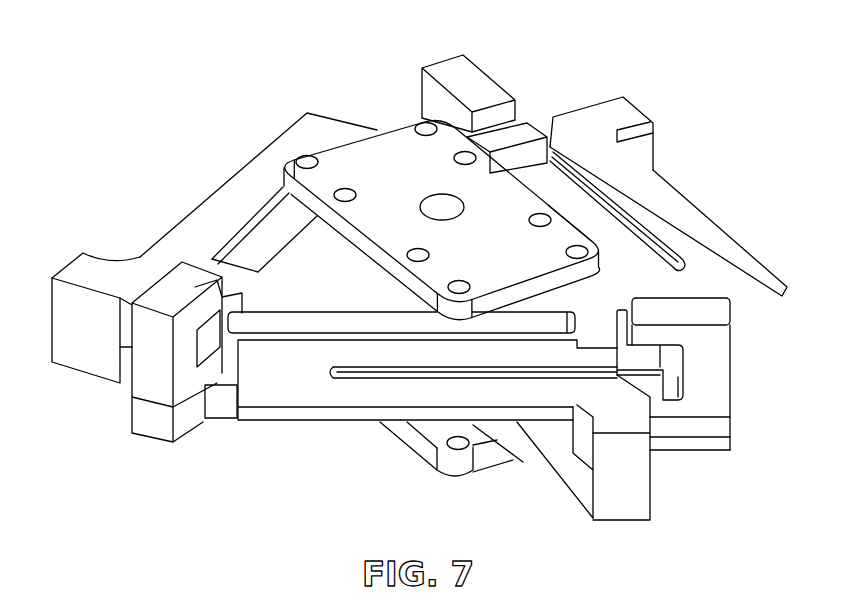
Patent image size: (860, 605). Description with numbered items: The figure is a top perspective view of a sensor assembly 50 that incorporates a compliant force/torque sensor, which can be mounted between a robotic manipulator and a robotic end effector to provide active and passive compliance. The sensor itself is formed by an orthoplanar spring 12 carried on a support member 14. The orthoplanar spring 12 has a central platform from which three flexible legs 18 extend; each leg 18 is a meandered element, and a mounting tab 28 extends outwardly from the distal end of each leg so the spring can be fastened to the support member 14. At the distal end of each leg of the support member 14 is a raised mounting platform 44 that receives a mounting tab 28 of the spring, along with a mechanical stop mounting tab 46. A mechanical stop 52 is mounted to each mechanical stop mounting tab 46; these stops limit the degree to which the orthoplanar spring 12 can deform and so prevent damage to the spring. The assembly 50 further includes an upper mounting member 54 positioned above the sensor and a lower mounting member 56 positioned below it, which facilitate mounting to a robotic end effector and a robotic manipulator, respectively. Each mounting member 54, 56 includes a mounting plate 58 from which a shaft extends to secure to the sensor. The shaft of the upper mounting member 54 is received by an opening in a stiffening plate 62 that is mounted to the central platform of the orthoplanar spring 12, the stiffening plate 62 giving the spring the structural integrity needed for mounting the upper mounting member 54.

The orthoplanar spring 12 is at (760, 200).
The support member 14 is at (90, 408).
The flexible leg 18 is at (200, 177).
The mounting tab 28 is at (88, 262).
The raised mounting platform 44 is at (60, 330).
The mechanical stop mounting tab 46 is at (150, 423).
The sensor assembly 50 is at (763, 90).
The mechanical stop 52 is at (475, 80).
The upper mounting member 54 is at (373, 116).
The lower mounting member 56 is at (397, 450).
The mounting plate 58 is at (385, 234).
The stiffening plate 62 is at (313, 260).